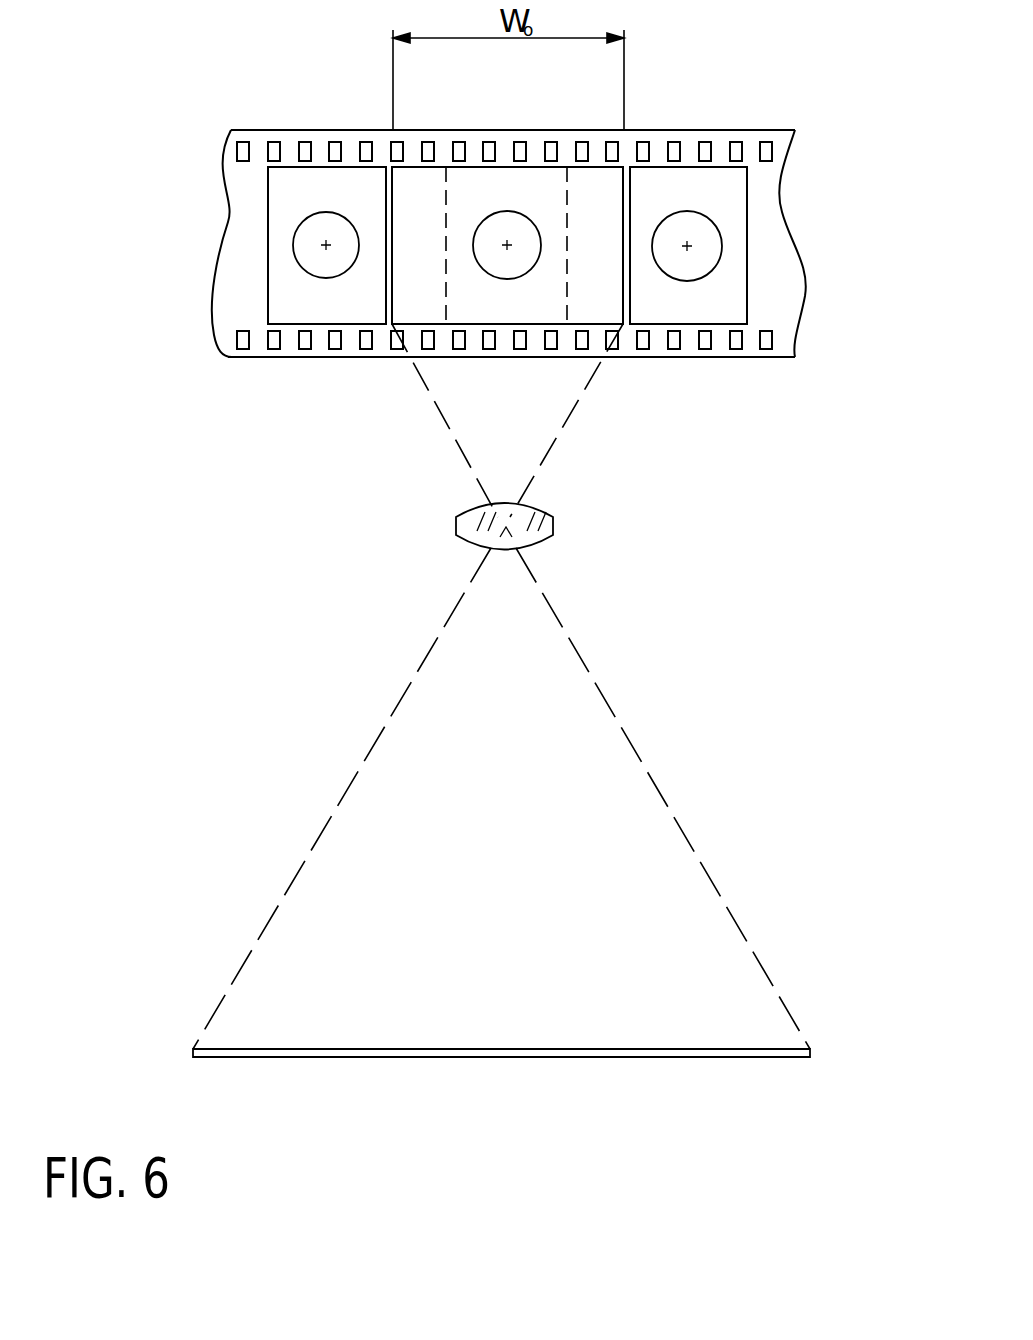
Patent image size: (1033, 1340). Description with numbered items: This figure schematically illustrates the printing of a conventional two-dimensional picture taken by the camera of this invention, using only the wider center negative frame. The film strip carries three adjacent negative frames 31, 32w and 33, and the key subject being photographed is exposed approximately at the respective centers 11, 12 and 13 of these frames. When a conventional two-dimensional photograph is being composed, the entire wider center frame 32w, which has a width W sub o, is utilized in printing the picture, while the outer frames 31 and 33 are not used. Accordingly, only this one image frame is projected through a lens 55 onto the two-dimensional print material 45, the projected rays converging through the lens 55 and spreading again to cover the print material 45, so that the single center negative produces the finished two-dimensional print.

The center of frame 11 is at (310, 273).
The center of frame 12 is at (520, 222).
The center of frame 13 is at (703, 267).
The frame 31 is at (291, 310).
The wider center negative frame 32w is at (539, 305).
The frame 33 is at (719, 312).
The lens 55 is at (551, 530).
The 2-D print material 45 is at (765, 1052).